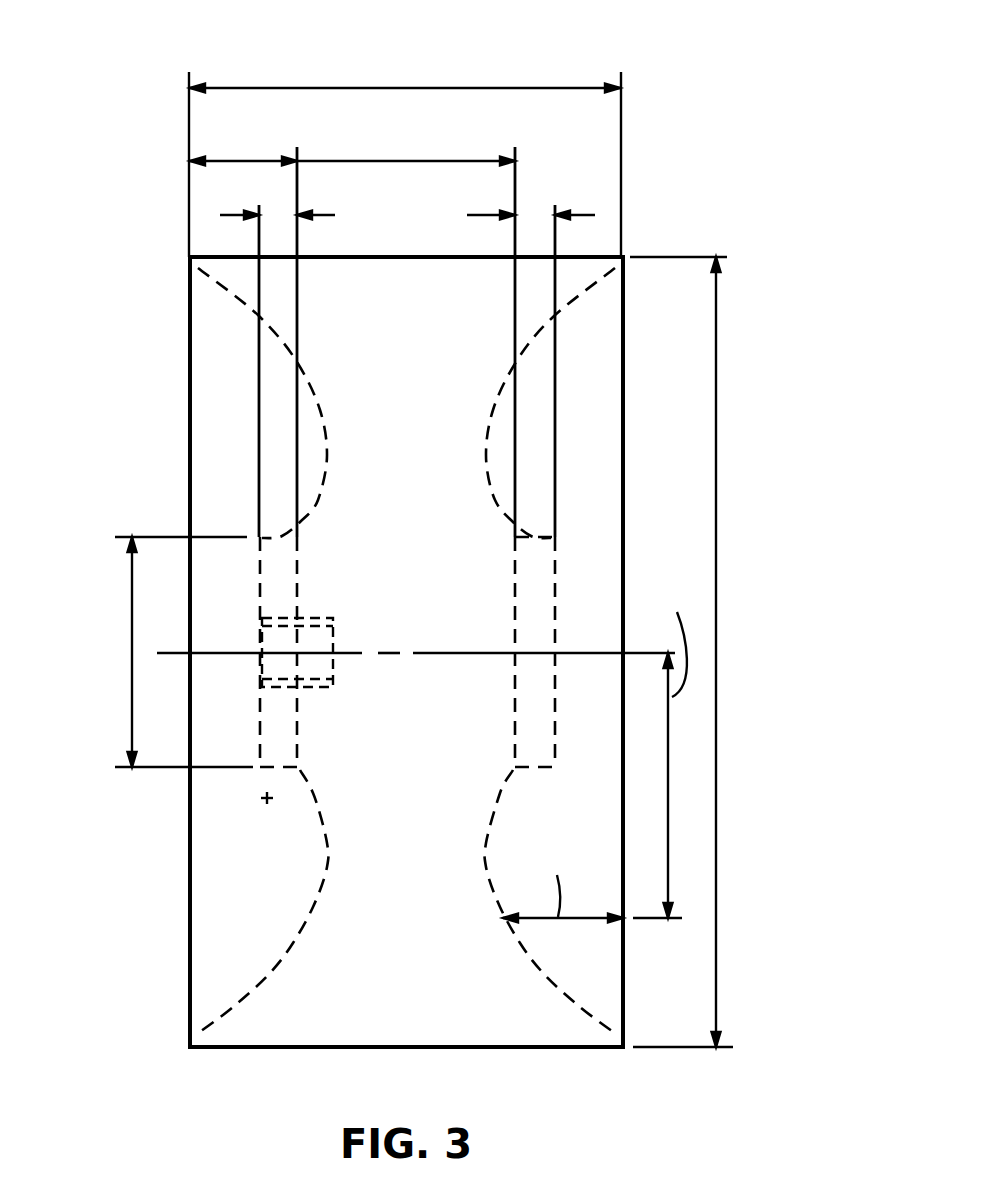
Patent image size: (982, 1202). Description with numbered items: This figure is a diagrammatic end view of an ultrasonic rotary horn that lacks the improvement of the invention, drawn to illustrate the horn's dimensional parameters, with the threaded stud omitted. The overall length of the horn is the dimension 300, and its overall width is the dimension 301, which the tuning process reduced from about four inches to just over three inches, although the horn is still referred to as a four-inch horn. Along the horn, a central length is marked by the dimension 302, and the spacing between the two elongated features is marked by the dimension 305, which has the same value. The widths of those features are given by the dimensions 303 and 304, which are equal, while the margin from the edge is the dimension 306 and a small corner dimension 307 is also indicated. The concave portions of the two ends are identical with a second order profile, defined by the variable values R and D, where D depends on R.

The horn length dimension 300 is at (717, 473).
The horn width dimension 301 is at (367, 88).
The central region length dimension 302 is at (128, 610).
The right slot width dimension 303 is at (533, 217).
The left slot width dimension 304 is at (280, 217).
The slot spacing dimension 305 is at (378, 160).
The edge margin dimension 306 is at (230, 160).
The corner radius dimension 307 is at (292, 771).